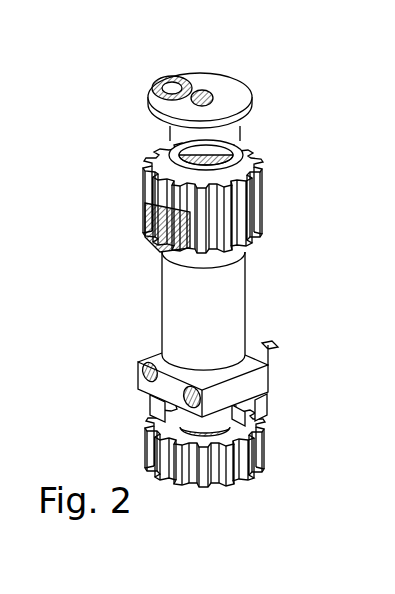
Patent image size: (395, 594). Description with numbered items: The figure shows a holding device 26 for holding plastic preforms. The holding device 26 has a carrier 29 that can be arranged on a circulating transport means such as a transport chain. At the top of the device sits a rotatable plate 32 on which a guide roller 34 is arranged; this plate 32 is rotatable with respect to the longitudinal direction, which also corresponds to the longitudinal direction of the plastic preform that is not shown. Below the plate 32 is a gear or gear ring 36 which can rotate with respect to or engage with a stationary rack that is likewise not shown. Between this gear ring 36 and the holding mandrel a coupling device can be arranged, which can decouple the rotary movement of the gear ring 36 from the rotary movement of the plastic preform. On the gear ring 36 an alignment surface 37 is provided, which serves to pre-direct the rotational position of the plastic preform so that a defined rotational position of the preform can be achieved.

The holding device 26 is at (221, 245).
The carrier 29 is at (253, 377).
The rotatable plate 32 is at (232, 103).
The guide roller 34 is at (173, 77).
The gear ring 36 is at (243, 203).
The alignment surface 37 is at (150, 210).